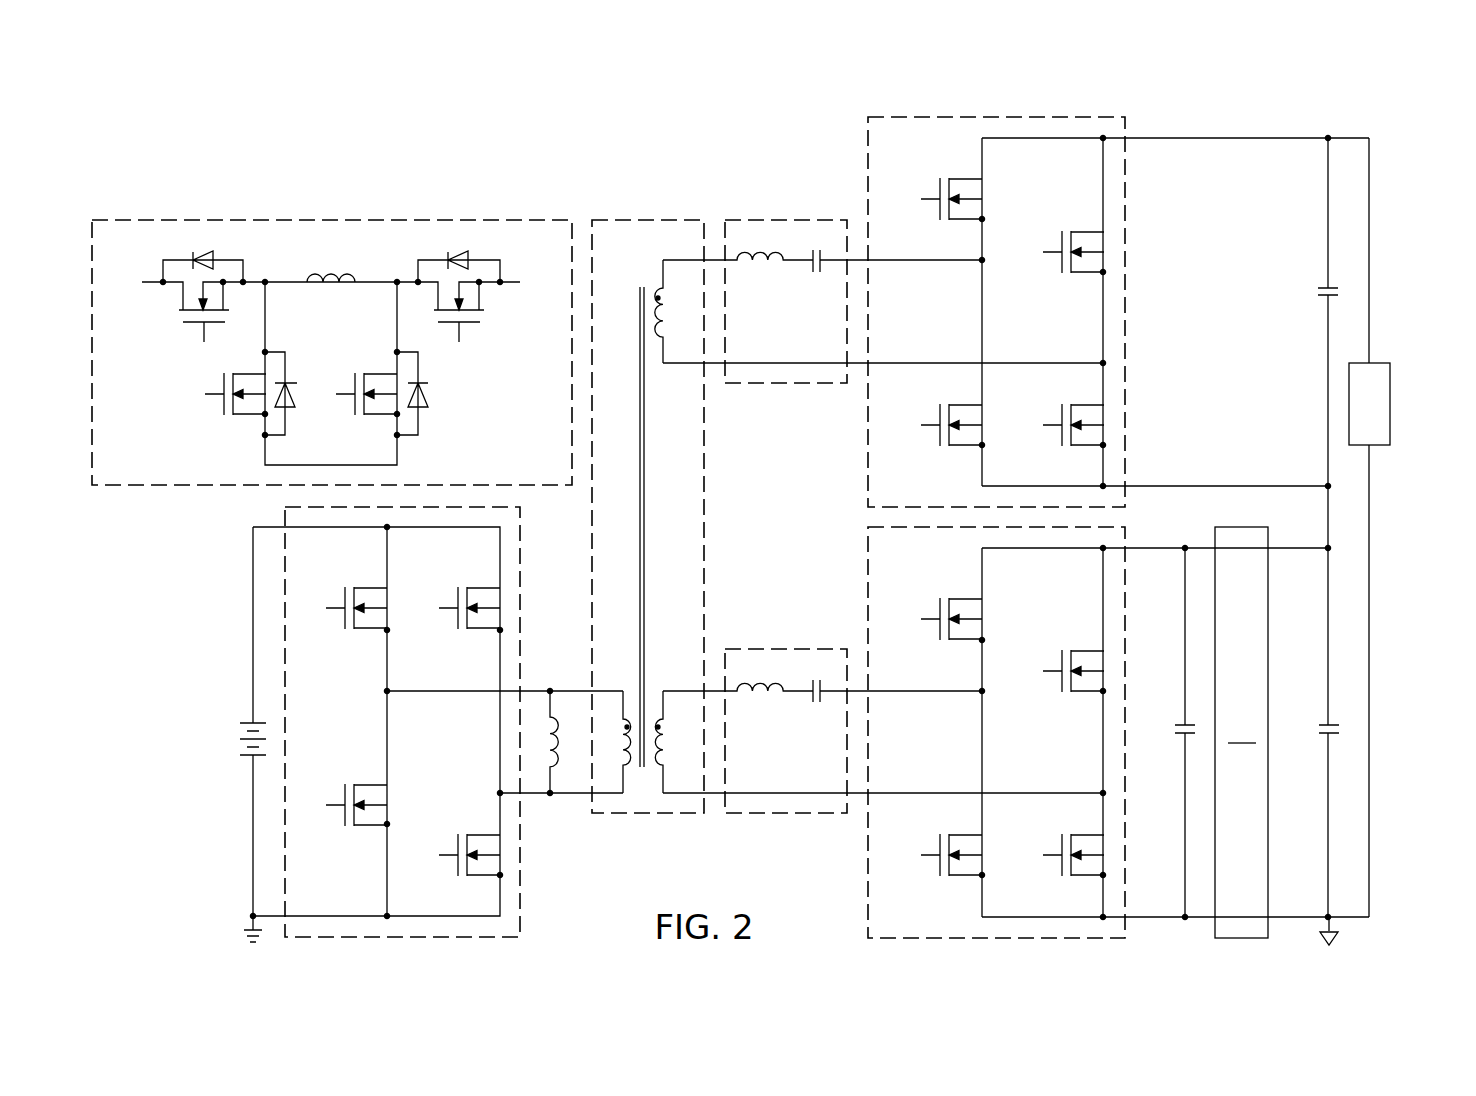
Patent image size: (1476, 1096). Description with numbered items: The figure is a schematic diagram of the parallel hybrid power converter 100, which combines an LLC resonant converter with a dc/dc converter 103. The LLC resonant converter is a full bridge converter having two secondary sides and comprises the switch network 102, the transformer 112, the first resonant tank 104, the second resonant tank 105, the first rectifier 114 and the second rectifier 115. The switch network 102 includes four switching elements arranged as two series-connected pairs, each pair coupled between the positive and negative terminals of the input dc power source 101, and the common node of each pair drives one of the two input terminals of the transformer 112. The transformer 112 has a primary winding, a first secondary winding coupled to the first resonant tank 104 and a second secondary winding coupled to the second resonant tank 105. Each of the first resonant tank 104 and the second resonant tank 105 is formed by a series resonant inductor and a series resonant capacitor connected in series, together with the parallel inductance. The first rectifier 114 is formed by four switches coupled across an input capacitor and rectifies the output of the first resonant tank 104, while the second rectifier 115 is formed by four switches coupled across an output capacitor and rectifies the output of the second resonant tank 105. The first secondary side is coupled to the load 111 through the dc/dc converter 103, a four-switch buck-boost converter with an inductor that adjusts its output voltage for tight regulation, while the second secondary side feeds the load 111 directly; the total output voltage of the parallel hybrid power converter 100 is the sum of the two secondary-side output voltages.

The parallel hybrid power converter 100 is at (180, 156).
The input dc power source 101 is at (237, 741).
The switch network 102 is at (525, 833).
The dc/dc converter 103 is at (294, 219).
The first resonant tank 104 is at (771, 648).
The second resonant tank 105 is at (750, 219).
The load 111 is at (1392, 411).
The transformer 112 is at (625, 219).
The first rectifier 114 is at (866, 582).
The second rectifier 115 is at (1130, 298).